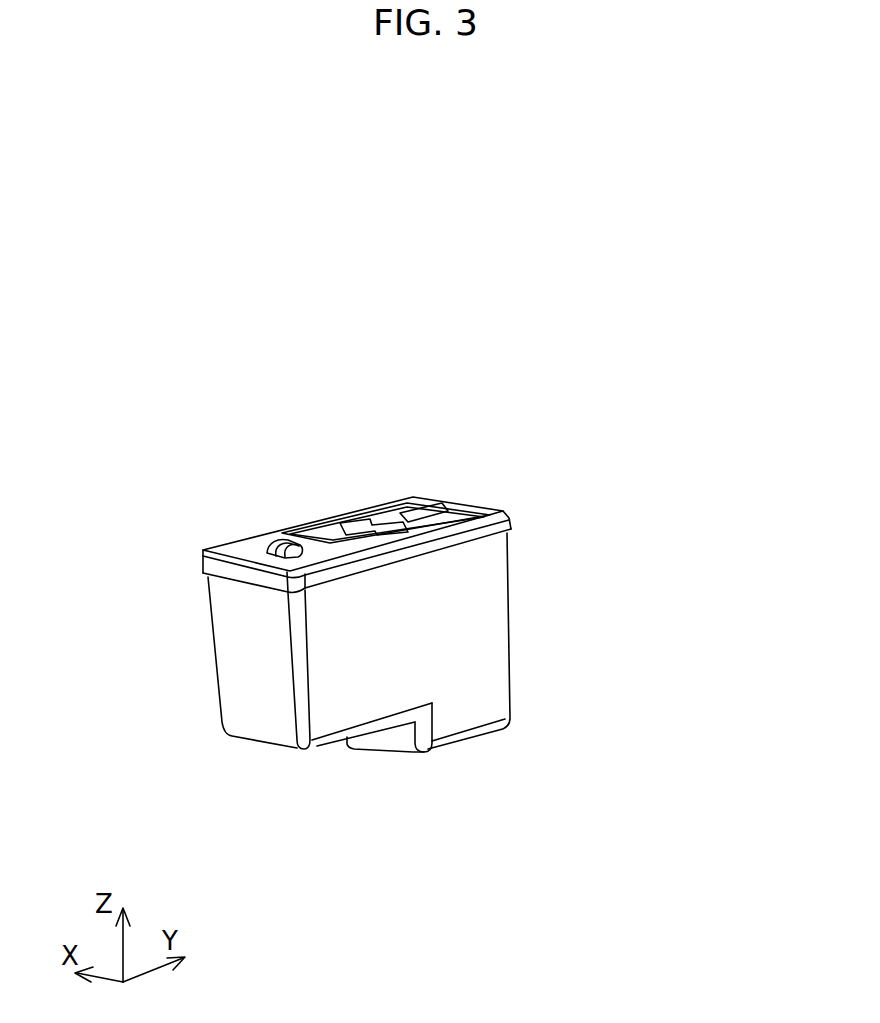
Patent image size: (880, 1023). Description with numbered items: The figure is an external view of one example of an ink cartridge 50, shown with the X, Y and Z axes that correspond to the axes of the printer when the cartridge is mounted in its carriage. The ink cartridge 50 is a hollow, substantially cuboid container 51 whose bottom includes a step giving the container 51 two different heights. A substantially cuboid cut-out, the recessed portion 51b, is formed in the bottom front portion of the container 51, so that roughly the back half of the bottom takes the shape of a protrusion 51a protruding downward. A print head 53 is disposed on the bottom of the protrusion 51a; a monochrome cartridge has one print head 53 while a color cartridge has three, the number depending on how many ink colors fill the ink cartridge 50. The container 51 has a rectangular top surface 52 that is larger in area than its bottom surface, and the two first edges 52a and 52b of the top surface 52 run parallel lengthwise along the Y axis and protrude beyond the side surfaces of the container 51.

The ink cartridge 50 is at (717, 478).
The container 51 is at (467, 667).
The protrusion 51a is at (467, 723).
The recessed portion 51b is at (307, 770).
The top surface 52 is at (467, 527).
The first edge 52a is at (445, 541).
The first edge 52b is at (266, 531).
The print head 53 is at (463, 743).